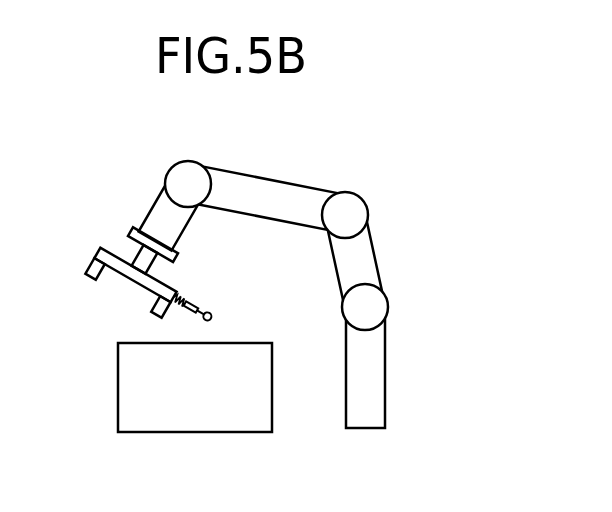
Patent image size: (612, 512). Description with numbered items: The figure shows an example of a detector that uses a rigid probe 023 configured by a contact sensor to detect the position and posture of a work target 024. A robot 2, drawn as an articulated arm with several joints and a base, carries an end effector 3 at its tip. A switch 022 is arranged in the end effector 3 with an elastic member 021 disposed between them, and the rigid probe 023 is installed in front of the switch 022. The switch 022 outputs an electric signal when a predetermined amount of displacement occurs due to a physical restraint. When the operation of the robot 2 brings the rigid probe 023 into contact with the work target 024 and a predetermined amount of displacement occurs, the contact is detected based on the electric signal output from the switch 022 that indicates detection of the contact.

The robot 2 is at (277, 176).
The end effector 3 is at (90, 265).
The elastic member 021 is at (181, 295).
The switch 022 is at (193, 303).
The rigid probe 023 is at (212, 317).
The work target 024 is at (178, 418).